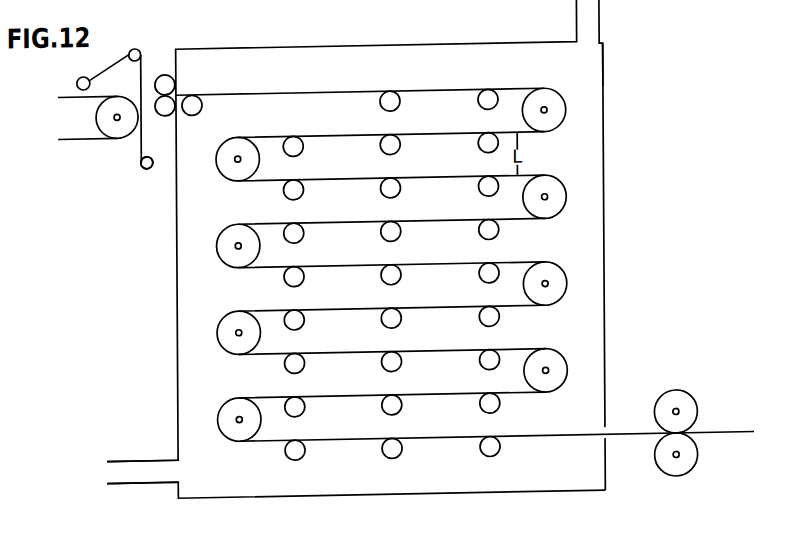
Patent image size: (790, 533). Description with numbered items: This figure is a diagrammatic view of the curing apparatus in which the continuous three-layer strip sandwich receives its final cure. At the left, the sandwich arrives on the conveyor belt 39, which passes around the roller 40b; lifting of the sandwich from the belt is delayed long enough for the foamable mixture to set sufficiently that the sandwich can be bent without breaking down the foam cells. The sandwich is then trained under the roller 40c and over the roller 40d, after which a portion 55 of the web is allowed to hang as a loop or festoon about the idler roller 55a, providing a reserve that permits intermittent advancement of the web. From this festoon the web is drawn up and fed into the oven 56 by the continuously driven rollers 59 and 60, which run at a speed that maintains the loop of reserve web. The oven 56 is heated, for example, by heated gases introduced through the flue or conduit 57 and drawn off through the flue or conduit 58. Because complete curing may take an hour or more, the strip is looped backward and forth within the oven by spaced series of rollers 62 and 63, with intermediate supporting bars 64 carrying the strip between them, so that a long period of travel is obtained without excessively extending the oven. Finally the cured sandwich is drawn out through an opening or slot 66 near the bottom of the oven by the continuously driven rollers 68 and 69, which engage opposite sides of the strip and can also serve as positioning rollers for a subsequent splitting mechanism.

The conveyor belt 39 is at (71, 135).
The roller 40b is at (115, 112).
The roller 40c is at (80, 73).
The roller 40d is at (136, 44).
The portion of web 55 is at (141, 157).
The idler roller 55a is at (146, 164).
The oven 56 is at (612, 252).
The flue or conduit 57 is at (129, 456).
The flue or conduit 58 is at (600, 27).
The continuously driven roller 59 is at (163, 71).
The continuously driven roller 60 is at (169, 111).
The series of rollers 62 is at (551, 128).
The series of rollers 63 is at (236, 222).
The intermediate supporting bars 64 is at (479, 142).
The opening or slot 66 is at (604, 431).
The continuously driven roller 68 is at (692, 398).
The continuously driven roller 69 is at (692, 467).